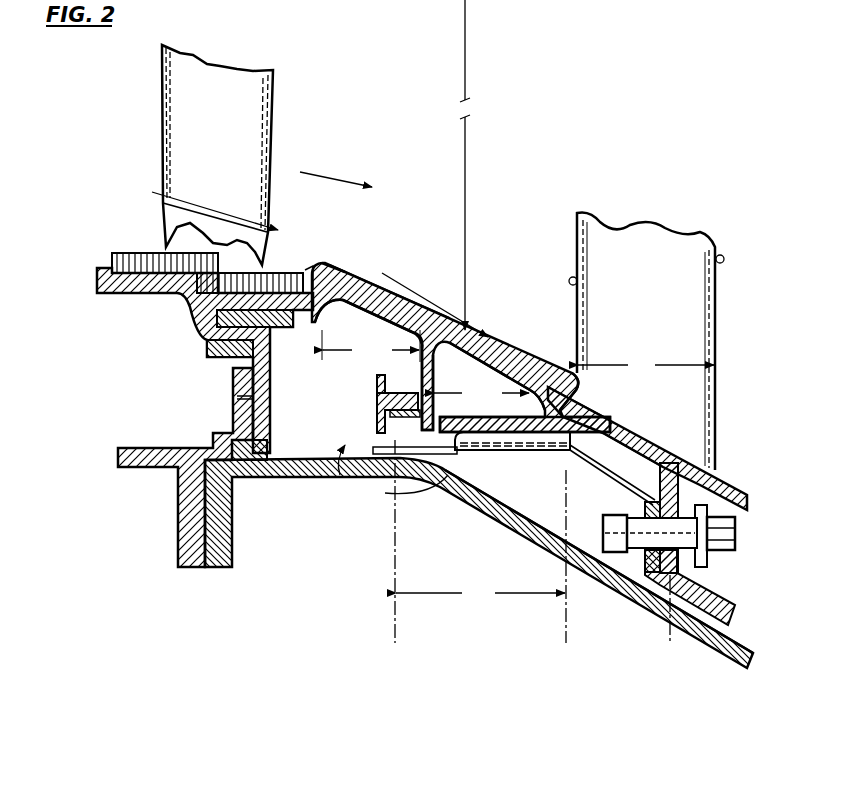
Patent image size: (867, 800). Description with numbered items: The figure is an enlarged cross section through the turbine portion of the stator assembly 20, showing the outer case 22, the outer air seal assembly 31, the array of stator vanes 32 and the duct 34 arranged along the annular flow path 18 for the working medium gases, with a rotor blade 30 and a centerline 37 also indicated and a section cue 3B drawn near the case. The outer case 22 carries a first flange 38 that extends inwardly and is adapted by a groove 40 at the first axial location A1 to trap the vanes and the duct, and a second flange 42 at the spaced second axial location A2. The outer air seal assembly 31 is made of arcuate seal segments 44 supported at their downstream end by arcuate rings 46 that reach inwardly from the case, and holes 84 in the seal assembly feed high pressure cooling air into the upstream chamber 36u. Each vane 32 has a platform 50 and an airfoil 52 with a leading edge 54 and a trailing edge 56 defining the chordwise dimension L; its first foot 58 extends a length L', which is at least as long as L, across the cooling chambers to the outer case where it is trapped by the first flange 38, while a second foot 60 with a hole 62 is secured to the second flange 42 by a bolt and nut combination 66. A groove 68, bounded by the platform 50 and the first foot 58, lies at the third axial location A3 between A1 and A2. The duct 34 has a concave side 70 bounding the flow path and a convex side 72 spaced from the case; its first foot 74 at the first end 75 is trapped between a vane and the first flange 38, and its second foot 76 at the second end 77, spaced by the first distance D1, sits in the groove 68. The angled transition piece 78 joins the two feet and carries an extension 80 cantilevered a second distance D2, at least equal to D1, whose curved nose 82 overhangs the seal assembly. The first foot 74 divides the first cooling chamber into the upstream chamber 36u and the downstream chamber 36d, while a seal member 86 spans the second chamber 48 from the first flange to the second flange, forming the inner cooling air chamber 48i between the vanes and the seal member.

The annular flow path 18 is at (322, 180).
The stator assembly 20 is at (355, 493).
The outer case 22 is at (505, 508).
The turbine blade 30 is at (226, 122).
The outer air seal assembly 31 is at (142, 252).
The array of stator vanes 32 is at (728, 428).
The duct 34 is at (500, 355).
The upstream chamber 36u is at (360, 388).
The downstream chamber 36d is at (476, 388).
The axial reference line 37 is at (448, 152).
The first flange 38 is at (376, 404).
The groove 40 is at (383, 427).
The second flange 42 is at (652, 597).
The arcuate seal segments 44 is at (152, 280).
The arcuate rings 46 is at (260, 360).
The second chamber 48 is at (602, 499).
The inner cooling air chamber 48i is at (633, 450).
The platform 50 is at (638, 448).
The airfoil 52 is at (654, 282).
The leading edge 54 is at (577, 250).
The trailing edge 56 is at (716, 259).
The first foot 58 is at (510, 441).
The second foot 60 is at (675, 505).
The hole 62 is at (665, 518).
The bolt and nut combination 66 is at (732, 540).
The groove 68 is at (575, 397).
The concave side 70 is at (352, 274).
The convex side 72 is at (368, 312).
The first foot 74 is at (430, 376).
The first end 75 is at (425, 347).
The second foot 76 is at (548, 403).
The second end 77 is at (552, 385).
The transition piece 78 is at (373, 451).
The extension 80 is at (368, 278).
The curved nose 82 is at (306, 270).
The holes 84 is at (250, 398).
The seal member 86 is at (618, 478).
The section indicator 3B is at (335, 472).
The first axial location A1 is at (397, 560).
The second axial location A2 is at (672, 627).
The third axial location A3 is at (568, 575).
The first distance D1 is at (481, 395).
The second distance D2 is at (371, 352).
The chordwise dimension L is at (646, 365).
The length of first foot L' is at (480, 595).